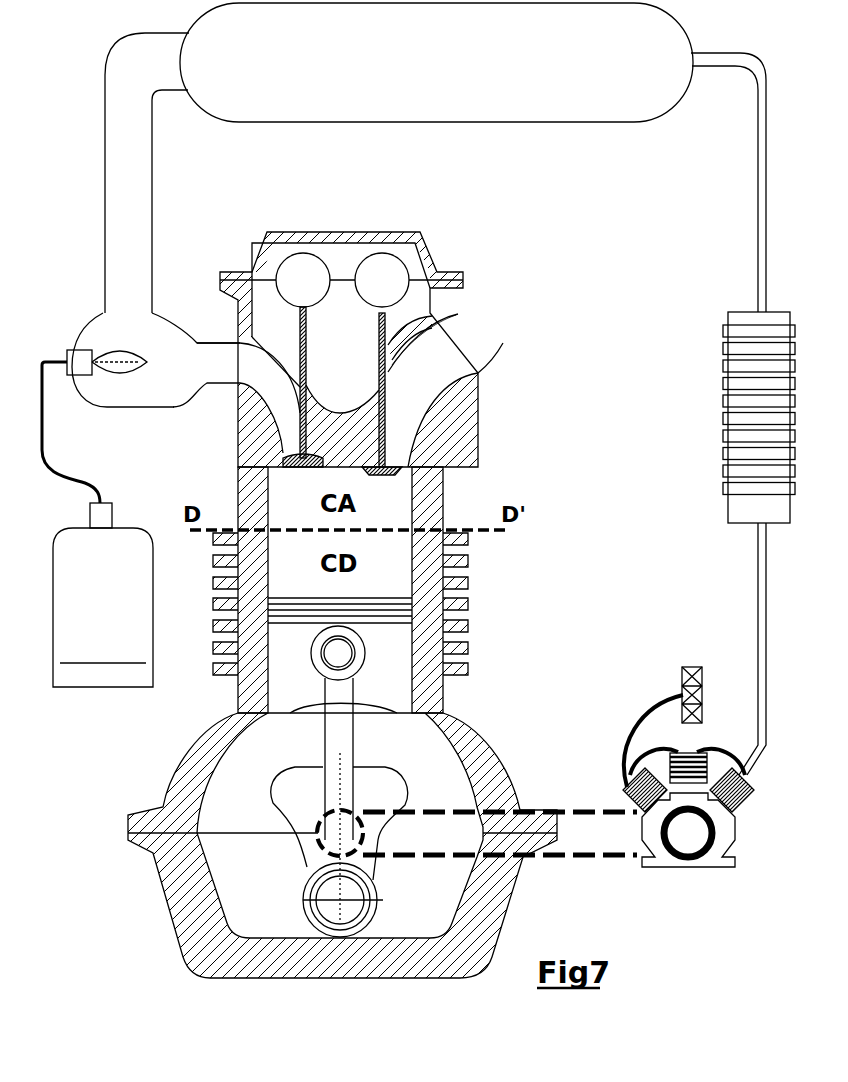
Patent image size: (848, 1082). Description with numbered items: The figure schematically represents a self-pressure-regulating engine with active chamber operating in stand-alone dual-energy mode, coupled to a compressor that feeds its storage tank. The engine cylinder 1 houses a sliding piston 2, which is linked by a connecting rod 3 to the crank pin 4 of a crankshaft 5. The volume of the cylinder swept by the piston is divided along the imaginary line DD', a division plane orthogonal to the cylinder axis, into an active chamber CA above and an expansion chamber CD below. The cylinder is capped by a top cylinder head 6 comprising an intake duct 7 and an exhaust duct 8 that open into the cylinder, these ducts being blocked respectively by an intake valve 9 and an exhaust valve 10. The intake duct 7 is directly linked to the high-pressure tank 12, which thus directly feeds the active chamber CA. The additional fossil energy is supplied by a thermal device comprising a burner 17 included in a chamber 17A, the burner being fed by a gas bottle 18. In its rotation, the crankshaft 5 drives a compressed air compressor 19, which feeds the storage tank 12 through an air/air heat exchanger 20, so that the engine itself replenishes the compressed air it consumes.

The engine cylinder 1 is at (413, 555).
The piston 2 is at (387, 673).
The connecting rod 3 is at (340, 733).
The crank pin 4 is at (350, 910).
The crankshaft 5 is at (303, 800).
The top cylinder head 6 is at (440, 420).
The intake duct 7 is at (127, 118).
The exhaust duct 8 is at (445, 348).
The intake valve 9 is at (320, 307).
The exhaust valve 10 is at (430, 285).
The high-pressure tank 12 is at (343, 77).
The burner 17 is at (120, 357).
The chamber 17A is at (163, 385).
The gas bottle 18 is at (128, 618).
The compressed air compressor 19 is at (640, 787).
The air/air heat exchanger 20 is at (730, 360).